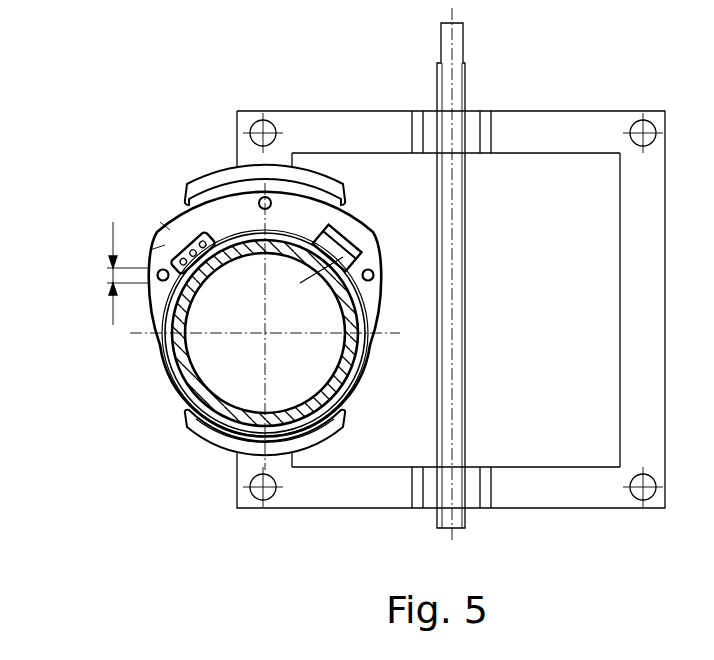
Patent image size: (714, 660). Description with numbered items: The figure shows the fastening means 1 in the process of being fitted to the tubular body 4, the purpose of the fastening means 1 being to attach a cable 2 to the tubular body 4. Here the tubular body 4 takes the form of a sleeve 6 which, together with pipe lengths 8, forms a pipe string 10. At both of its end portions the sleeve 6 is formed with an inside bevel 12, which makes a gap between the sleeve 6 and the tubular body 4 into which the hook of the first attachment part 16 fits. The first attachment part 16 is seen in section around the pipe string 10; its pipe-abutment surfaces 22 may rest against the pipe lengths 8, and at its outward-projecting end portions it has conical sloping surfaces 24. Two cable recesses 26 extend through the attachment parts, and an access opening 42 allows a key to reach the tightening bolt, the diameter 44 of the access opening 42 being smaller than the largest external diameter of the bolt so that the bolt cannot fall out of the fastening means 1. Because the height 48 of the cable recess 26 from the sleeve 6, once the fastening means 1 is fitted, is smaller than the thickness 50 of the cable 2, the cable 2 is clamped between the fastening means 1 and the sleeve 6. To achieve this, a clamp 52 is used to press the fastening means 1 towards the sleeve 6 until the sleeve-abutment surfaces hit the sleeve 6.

The fastening means 1 is at (182, 198).
The cable 2 is at (170, 262).
The tubular body 4 is at (177, 390).
The sleeve 6 is at (265, 333).
The pipe lengths 8 is at (200, 430).
The pipe string 10 is at (140, 378).
The inside bevel 12 is at (170, 353).
The first attachment part 16 is at (377, 293).
The pipe-abutment surfaces 22 is at (355, 318).
The conical sloping surfaces 24 is at (297, 203).
The cable recesses 26 is at (343, 263).
The access opening 42 is at (160, 283).
The diameter of the access opening 44 is at (107, 268).
The height of the cable recess 48 is at (356, 236).
The thickness of the cable 50 is at (178, 233).
The clamp 52 is at (552, 130).